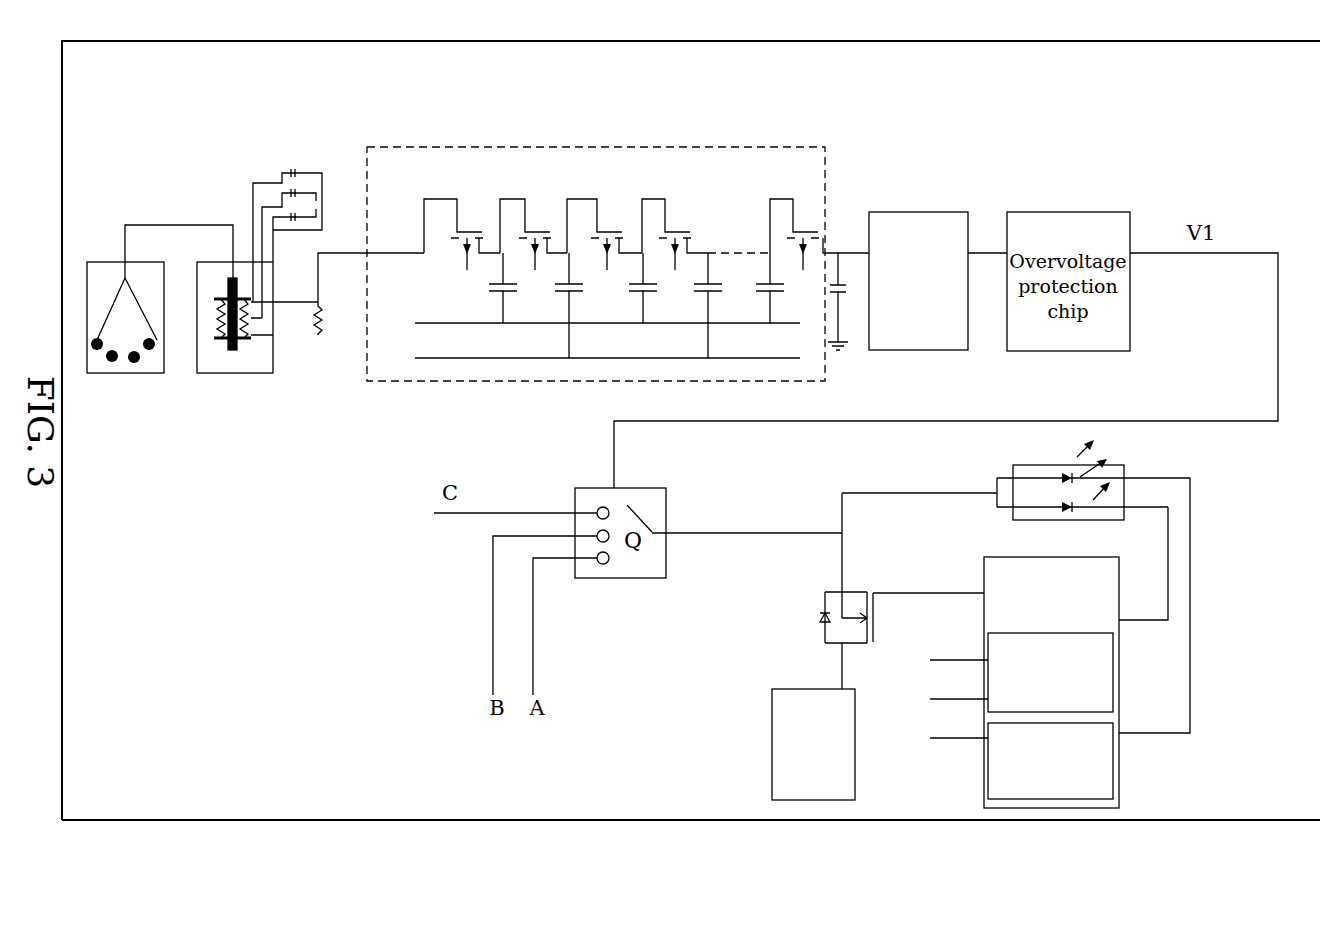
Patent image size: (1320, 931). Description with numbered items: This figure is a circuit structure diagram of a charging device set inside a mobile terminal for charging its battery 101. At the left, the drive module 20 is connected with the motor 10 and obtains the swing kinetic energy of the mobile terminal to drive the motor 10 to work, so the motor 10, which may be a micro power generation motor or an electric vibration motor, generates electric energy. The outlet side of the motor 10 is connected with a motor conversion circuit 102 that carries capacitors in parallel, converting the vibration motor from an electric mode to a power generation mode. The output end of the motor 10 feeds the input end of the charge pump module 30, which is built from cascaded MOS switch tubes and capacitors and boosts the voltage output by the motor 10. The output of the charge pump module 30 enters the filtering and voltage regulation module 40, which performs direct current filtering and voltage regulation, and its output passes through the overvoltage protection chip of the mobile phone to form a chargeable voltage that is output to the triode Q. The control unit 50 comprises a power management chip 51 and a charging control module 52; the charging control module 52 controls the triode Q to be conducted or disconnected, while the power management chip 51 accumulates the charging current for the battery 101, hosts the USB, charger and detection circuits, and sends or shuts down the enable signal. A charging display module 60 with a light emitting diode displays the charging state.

The motor 10 is at (188, 266).
The drive module 20 is at (86, 262).
The charge pump module 30 is at (826, 180).
The filtering and voltage regulation module 40 is at (947, 212).
The control unit 50 is at (1094, 682).
The power management chip 51 is at (1113, 673).
The charging control module 52 is at (1113, 758).
The charging display module 60 is at (1045, 458).
The battery 101 is at (772, 783).
The motor conversion circuit 102 is at (303, 172).